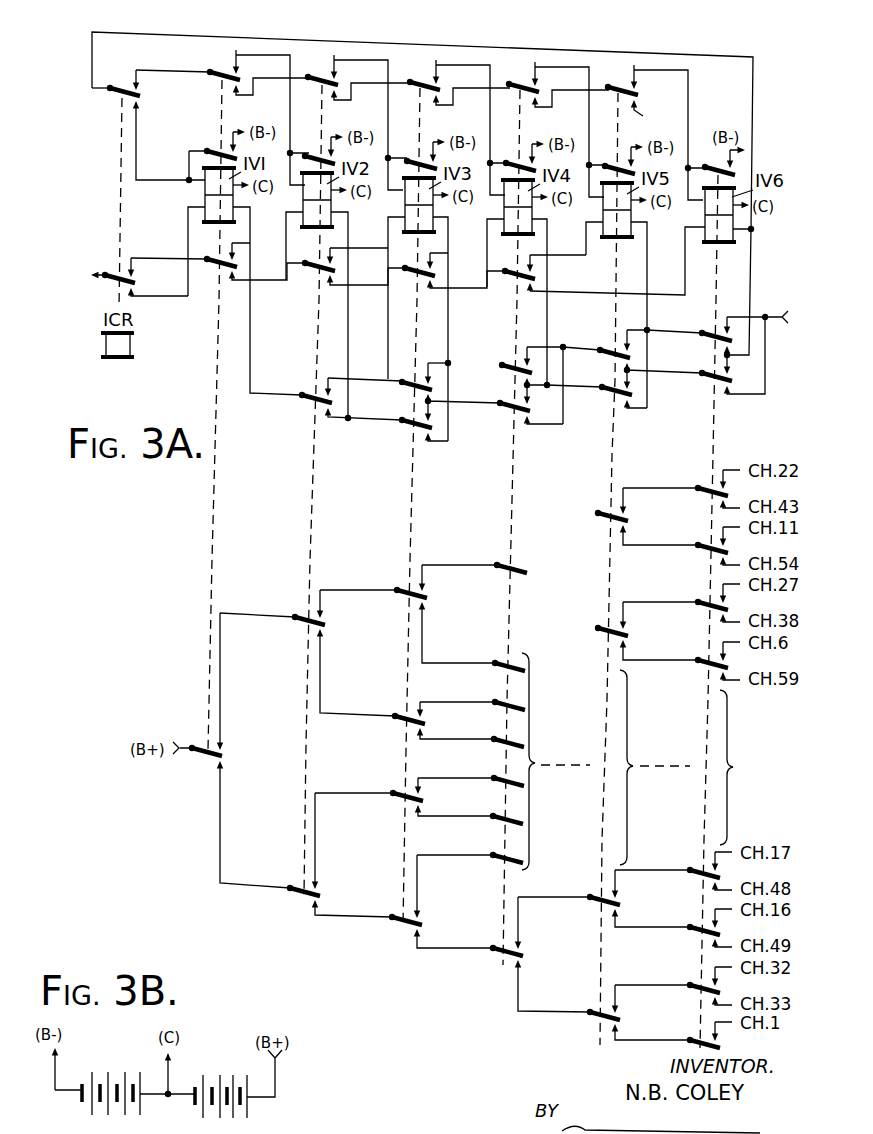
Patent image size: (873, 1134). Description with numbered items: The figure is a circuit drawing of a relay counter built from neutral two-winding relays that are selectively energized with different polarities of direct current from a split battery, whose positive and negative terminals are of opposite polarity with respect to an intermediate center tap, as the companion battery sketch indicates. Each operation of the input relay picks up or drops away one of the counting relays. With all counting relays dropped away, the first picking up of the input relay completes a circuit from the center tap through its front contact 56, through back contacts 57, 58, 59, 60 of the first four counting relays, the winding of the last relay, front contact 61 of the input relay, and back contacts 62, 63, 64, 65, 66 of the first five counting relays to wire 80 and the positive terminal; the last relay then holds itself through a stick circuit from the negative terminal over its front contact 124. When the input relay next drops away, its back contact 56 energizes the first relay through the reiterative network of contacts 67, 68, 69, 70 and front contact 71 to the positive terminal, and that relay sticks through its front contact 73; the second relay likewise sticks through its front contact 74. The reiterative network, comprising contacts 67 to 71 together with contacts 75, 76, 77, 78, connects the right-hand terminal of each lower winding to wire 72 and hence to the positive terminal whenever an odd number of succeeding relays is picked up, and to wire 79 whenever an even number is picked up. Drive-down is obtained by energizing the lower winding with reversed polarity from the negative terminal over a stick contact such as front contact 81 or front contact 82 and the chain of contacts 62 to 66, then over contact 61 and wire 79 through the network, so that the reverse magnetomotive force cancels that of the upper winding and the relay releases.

The contact of relay 1CR 56 is at (117, 273).
The contact of relay 1V1 57 is at (215, 266).
The contact of relay 1V2 58 is at (313, 269).
The contact of relay 1V3 59 is at (416, 275).
The back contact of relay 1V4 60 is at (517, 279).
The contact of relay 1CR 61 is at (125, 86).
The back contact of relay 1V1 62 is at (210, 76).
The contact of relay 1V2 63 is at (350, 78).
The contact of relay 1V3 64 is at (452, 83).
The back contact of relay 1V4 65 is at (552, 84).
The back contact of relay 1V5 66 is at (637, 92).
The contact of relay 1V2 67 is at (310, 399).
The contact of relay 1V3 68 is at (407, 428).
The contact of relay 1V4 69 is at (510, 368).
The contact of relay 1V5 70 is at (612, 393).
The front contact of relay 1V6 71 is at (710, 337).
The wire 72 is at (753, 315).
The front contact of relay 1V1 73 is at (206, 149).
The front contact of relay 1V2 74 is at (314, 141).
The back contact of relay 1V3 75 is at (405, 385).
The back contact of relay 1V4 76 is at (507, 409).
The back contact of relay 1V5 77 is at (612, 354).
The front contact of relay 1V6 78 is at (712, 380).
The wire 79 is at (155, 34).
The wire 80 is at (625, 145).
The front contact of relay 1V3 81 is at (416, 147).
The front contact of relay 1V4 82 is at (516, 150).
The front contact of relay 1V6 124 is at (712, 161).